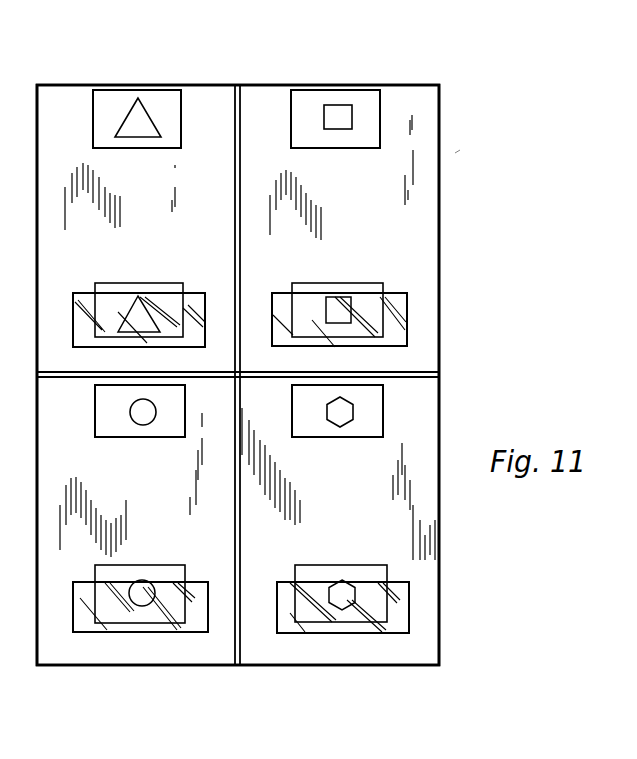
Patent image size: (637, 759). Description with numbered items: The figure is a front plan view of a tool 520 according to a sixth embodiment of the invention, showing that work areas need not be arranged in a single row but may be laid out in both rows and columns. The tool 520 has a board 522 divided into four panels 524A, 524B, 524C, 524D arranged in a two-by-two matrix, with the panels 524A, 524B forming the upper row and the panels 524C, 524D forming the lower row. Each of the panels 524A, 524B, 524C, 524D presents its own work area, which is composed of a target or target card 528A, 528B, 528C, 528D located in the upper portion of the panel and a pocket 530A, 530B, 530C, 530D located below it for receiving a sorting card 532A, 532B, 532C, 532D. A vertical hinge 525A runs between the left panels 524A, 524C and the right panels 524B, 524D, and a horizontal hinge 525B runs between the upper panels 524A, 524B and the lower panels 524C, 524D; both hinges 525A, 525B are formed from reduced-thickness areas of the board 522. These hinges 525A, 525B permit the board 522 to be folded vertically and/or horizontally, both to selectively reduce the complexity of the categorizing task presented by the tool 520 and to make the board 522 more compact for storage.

The tool 520 is at (455, 153).
The board 522 is at (56, 81).
The panel 524A is at (220, 85).
The panel 524B is at (438, 85).
The panel 524C is at (38, 655).
The panel 524D is at (432, 607).
The vertical hinge 525A is at (241, 647).
The horizontal hinge 525B is at (100, 378).
The target card 528A is at (167, 88).
The target card 528B is at (340, 92).
The target card 528C is at (107, 418).
The target card 528D is at (373, 397).
The pocket 530A is at (77, 298).
The pocket 530B is at (403, 313).
The pocket 530C is at (148, 630).
The pocket 530D is at (398, 627).
The sorting card 532A is at (187, 258).
The sorting card 532B is at (330, 285).
The sorting card 532C is at (132, 566).
The sorting card 532D is at (390, 536).